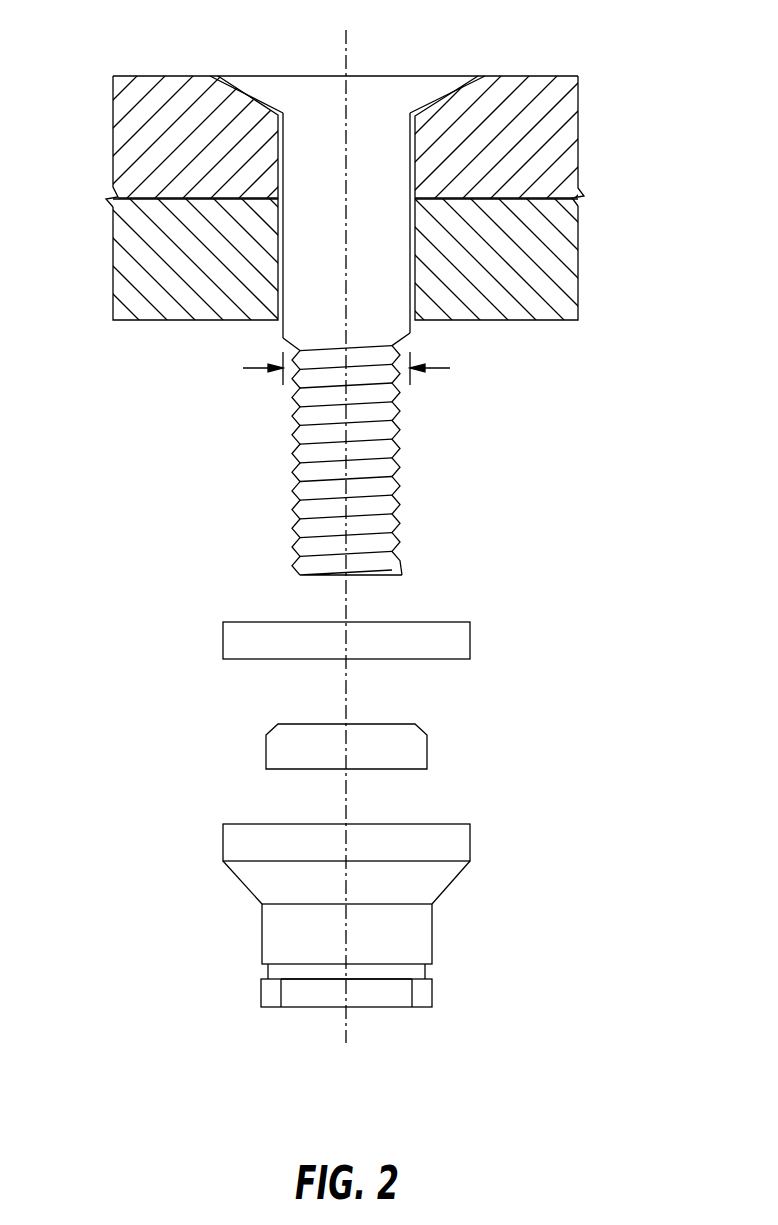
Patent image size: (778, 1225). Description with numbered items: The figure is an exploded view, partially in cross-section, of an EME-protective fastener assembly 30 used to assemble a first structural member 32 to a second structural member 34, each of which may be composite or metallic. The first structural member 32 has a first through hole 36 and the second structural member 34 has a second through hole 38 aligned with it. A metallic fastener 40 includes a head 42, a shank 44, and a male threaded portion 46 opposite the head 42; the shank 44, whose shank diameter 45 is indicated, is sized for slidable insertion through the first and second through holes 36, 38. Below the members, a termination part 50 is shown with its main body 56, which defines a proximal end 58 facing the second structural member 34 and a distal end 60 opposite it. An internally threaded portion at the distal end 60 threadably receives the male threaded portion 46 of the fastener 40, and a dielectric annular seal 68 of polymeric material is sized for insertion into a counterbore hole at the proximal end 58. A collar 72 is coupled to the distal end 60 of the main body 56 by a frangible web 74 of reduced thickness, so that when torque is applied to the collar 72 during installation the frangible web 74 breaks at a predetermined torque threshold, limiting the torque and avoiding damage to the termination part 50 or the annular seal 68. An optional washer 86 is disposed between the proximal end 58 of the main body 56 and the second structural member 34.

The fastener assembly 30 is at (200, 581).
The first structural member 32 is at (567, 108).
The second structural member 34 is at (573, 260).
The first through hole 36 is at (277, 163).
The second through hole 38 is at (277, 275).
The fastener 40 is at (377, 150).
The head 42 is at (268, 90).
The shank 44 is at (385, 312).
The shank diameter 45 is at (334, 368).
The male threaded portion 46 is at (395, 493).
The termination part 50 is at (365, 919).
The main body 56 is at (250, 927).
The proximal end 58 is at (425, 824).
The distal end 60 is at (388, 965).
The annular seal 68 is at (418, 753).
The collar 72 is at (272, 997).
The frangible web 74 is at (268, 974).
The washer 86 is at (464, 637).